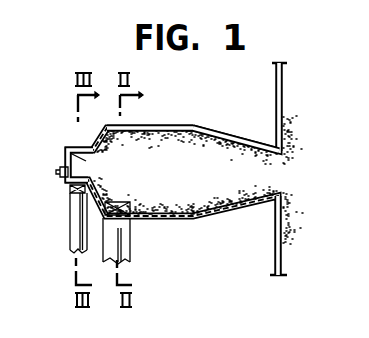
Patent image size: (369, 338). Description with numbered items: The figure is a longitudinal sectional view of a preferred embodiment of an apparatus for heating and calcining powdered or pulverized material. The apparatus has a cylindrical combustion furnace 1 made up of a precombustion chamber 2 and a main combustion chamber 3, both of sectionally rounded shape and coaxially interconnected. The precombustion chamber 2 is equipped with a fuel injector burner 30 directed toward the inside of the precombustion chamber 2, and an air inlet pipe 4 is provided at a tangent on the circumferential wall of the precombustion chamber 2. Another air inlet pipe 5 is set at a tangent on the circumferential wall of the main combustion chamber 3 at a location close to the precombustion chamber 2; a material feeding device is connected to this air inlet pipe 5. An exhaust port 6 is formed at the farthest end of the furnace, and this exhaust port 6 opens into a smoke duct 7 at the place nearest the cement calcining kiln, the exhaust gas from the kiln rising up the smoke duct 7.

The combustion furnace 1 is at (176, 127).
The precombustion chamber 2 is at (67, 149).
The main combustion chamber 3 is at (154, 126).
The air inlet pipe 4 is at (77, 213).
The air inlet pipe 5 is at (121, 242).
The exhaust port 6 is at (267, 174).
The smoke duct 7 is at (276, 232).
The fuel injector burner 30 is at (58, 175).